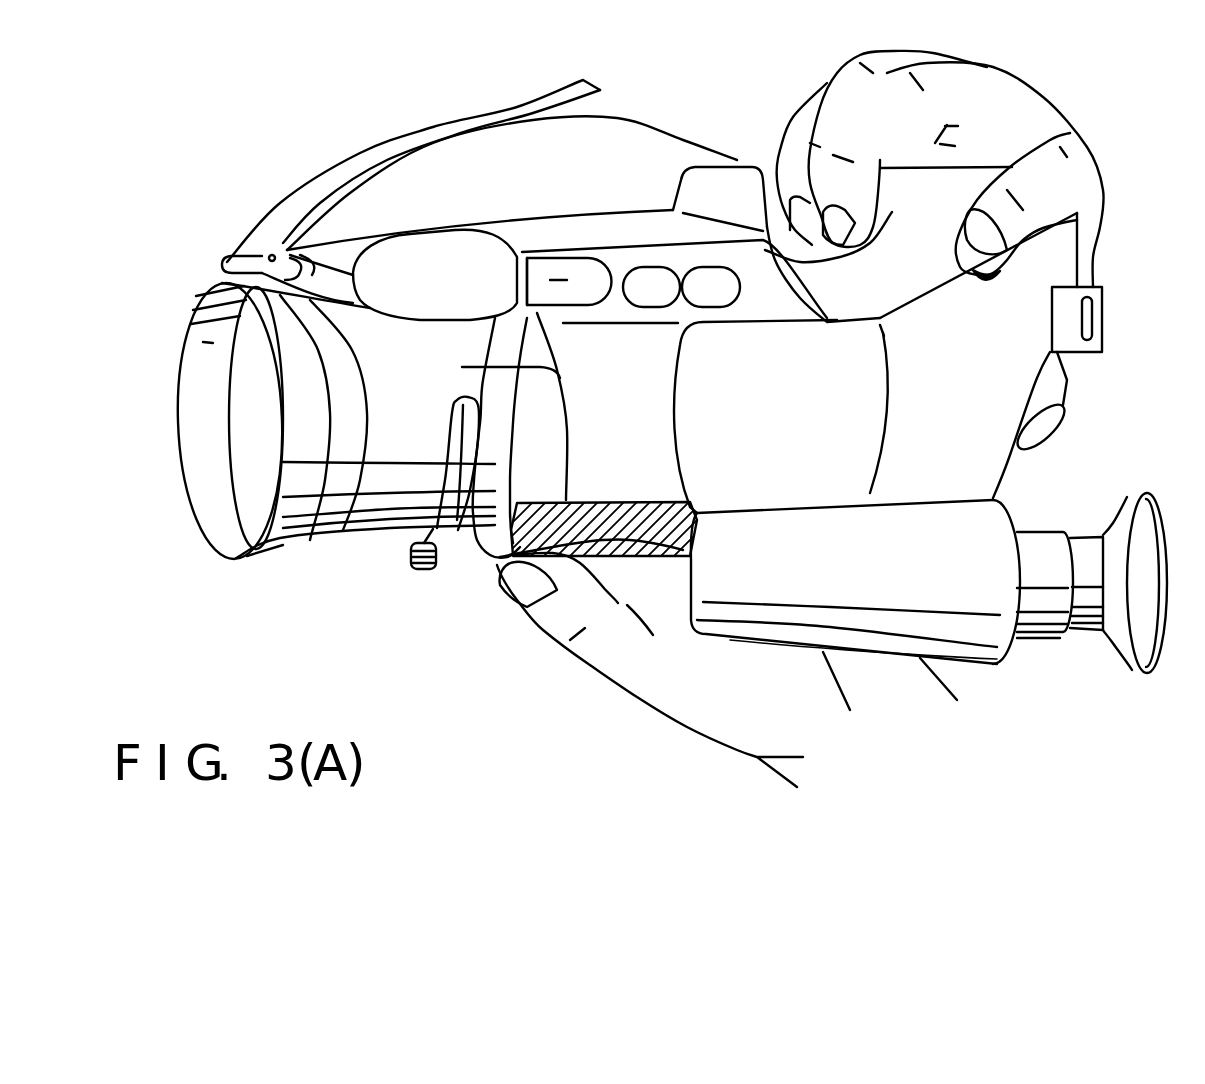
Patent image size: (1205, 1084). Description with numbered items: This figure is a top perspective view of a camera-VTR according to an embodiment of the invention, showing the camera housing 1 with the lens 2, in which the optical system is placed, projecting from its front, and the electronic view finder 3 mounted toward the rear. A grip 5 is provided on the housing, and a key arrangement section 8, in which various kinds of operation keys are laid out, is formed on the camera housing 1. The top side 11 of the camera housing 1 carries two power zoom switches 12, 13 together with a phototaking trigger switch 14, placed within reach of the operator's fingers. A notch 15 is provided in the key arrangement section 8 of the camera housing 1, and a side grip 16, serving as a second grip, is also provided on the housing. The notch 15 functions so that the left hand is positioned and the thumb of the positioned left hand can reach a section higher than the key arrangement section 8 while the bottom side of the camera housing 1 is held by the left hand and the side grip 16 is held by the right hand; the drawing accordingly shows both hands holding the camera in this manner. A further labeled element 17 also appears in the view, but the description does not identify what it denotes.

The camera housing 1 is at (1010, 463).
The lens 2 is at (281, 541).
The electronic view finder 3 is at (993, 643).
The grip 5 is at (515, 221).
The key arrangement section 8 is at (601, 512).
The top side of the camera housing 11 is at (1037, 360).
The power zoom switch 12 is at (647, 278).
The power zoom switch 13 is at (720, 278).
The phototaking trigger switch 14 is at (1078, 241).
The notch 15 is at (508, 551).
The side grip 16 is at (973, 177).
The grip cushion 17 is at (392, 257).